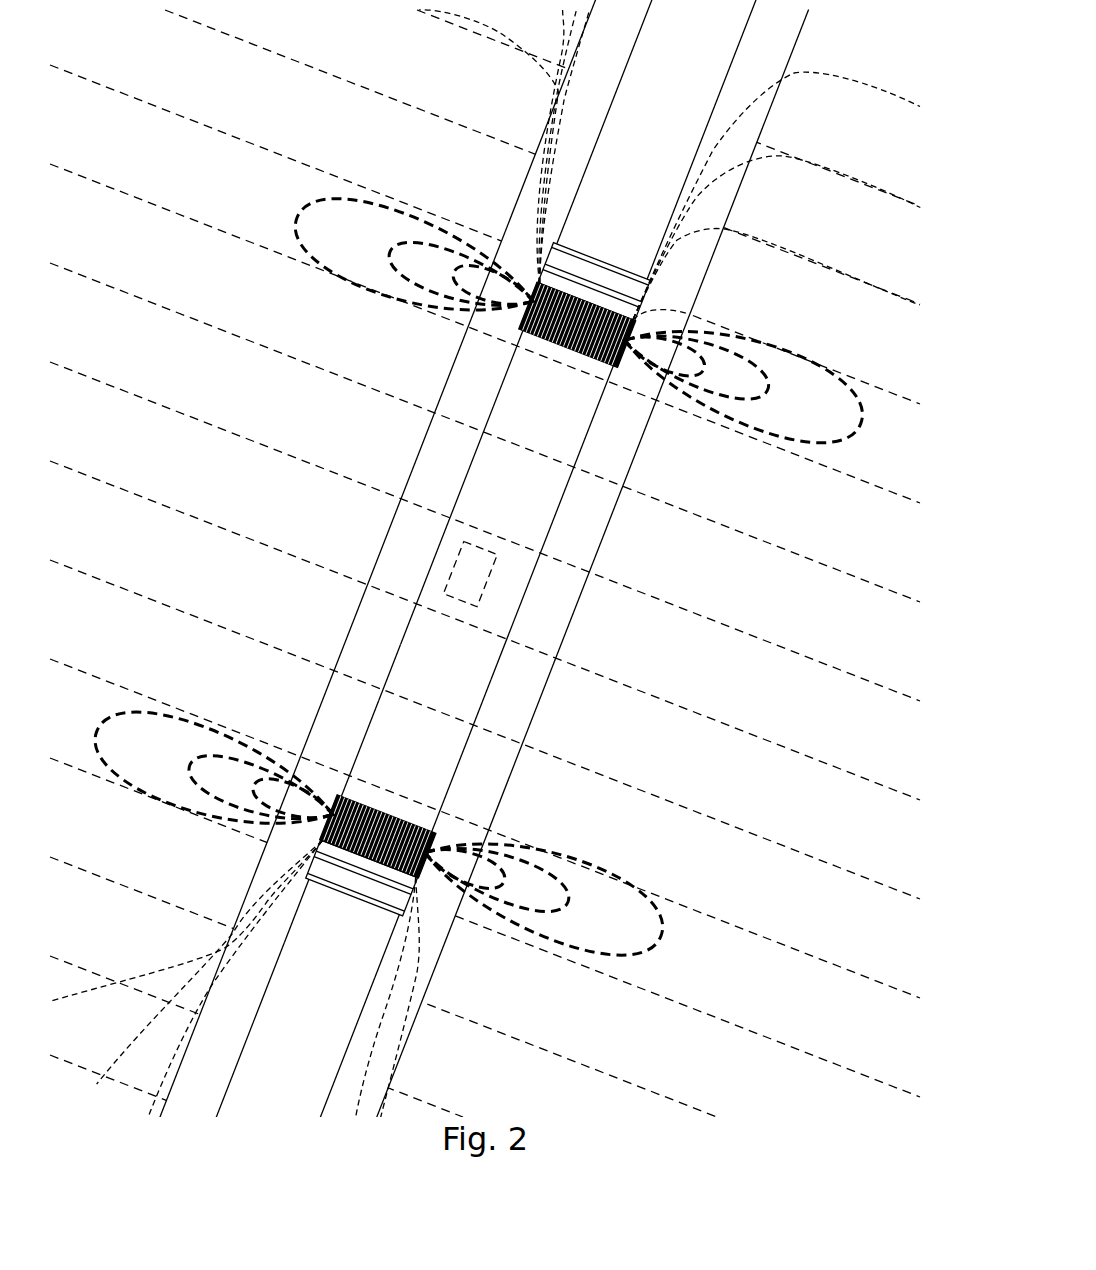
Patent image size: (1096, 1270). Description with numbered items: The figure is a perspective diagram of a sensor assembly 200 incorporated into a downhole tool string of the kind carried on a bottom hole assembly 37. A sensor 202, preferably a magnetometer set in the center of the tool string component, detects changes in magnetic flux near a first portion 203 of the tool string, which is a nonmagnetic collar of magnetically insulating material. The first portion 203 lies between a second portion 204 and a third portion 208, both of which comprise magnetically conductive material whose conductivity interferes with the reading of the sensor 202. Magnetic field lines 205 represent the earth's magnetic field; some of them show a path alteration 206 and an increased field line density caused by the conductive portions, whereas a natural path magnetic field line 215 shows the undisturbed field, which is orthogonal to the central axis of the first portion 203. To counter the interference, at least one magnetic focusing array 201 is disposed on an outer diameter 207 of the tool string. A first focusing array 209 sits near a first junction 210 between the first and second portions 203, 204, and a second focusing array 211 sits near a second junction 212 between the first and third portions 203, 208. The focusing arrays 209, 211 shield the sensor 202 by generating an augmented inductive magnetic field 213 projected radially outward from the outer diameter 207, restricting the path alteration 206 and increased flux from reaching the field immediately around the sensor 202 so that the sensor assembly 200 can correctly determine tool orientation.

The sensor assembly 200 is at (187, 77).
The magnetic field lines 205 is at (70, 163).
The augmented inductive magnetic field 213 is at (295, 208).
The second junction 212 is at (613, 258).
The third portion 208 is at (677, 65).
The natural path magnetic field line 215 is at (113, 395).
The magnetic focusing array 201 is at (632, 370).
The second focusing array 211 is at (616, 375).
The bottom hole assembly 37 is at (745, 598).
The sensor 202 is at (500, 600).
The first portion 203 is at (455, 690).
The outer diameter 207 is at (408, 748).
The first focusing array 209 is at (333, 790).
The path alteration 206 is at (293, 907).
The first junction 210 is at (365, 912).
The second portion 204 is at (251, 1092).